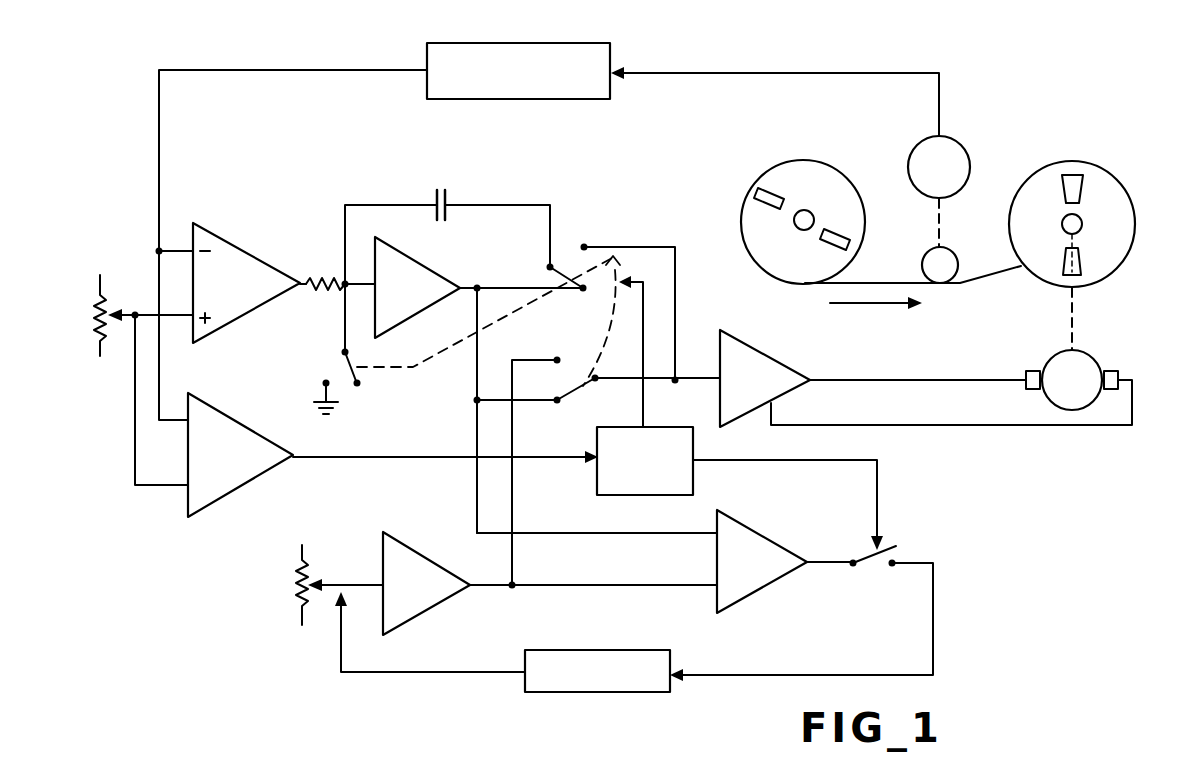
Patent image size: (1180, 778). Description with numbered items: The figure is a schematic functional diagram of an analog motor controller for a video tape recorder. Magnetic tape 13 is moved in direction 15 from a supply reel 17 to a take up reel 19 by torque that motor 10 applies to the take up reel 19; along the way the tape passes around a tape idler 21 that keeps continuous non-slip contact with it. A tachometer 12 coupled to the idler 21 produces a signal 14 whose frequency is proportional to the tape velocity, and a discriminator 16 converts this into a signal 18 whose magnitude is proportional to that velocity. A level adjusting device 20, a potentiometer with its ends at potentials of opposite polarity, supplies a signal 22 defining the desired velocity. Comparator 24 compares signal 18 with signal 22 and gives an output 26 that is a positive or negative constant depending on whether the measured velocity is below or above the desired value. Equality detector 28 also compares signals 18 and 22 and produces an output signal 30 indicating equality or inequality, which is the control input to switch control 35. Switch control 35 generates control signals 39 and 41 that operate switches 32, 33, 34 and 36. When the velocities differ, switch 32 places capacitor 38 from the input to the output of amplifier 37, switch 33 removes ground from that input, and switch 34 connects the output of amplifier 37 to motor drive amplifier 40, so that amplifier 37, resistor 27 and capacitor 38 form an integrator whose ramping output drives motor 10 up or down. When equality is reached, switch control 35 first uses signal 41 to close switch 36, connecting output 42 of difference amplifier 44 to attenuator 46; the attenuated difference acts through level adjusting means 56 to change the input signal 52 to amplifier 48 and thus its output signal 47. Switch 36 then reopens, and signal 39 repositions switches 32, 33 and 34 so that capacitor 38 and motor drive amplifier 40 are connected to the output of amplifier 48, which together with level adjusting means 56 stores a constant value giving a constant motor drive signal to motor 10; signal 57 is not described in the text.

The motor 10 is at (1092, 360).
The tachometer 12 is at (957, 150).
The magnetic tape 13 is at (880, 283).
The signal 14 is at (690, 73).
The direction 15 is at (878, 303).
The discriminator 16 is at (527, 45).
The supply reel 17 is at (826, 168).
The signal 18 is at (240, 70).
The take up reel 19 is at (1113, 178).
The level adjusting device 20 is at (100, 312).
The tape idler 21 is at (946, 256).
The signal 22 is at (127, 300).
The comparator 24 is at (226, 238).
The output 26 is at (303, 290).
The resistor 27 is at (328, 265).
The equality detector 28 is at (226, 424).
The output signal 30 is at (360, 457).
The switch 32 is at (567, 262).
The switch 33 is at (366, 370).
The switch 34 is at (584, 392).
The switch control 35 is at (695, 448).
The switch 36 is at (893, 540).
The amplifier 37 is at (412, 263).
The capacitor 38 is at (450, 195).
The control signal 39 is at (655, 400).
The motor drive amplifier 40 is at (762, 355).
The control signal 41 is at (828, 460).
The output 42 is at (830, 566).
The difference amplifier 44 is at (788, 547).
The attenuator 46 is at (614, 650).
The signal 47 is at (548, 585).
The amplifier 48 is at (416, 548).
The input signal 52 is at (360, 585).
The level adjusting means 56 is at (300, 579).
The integrator output line 57 is at (555, 533).